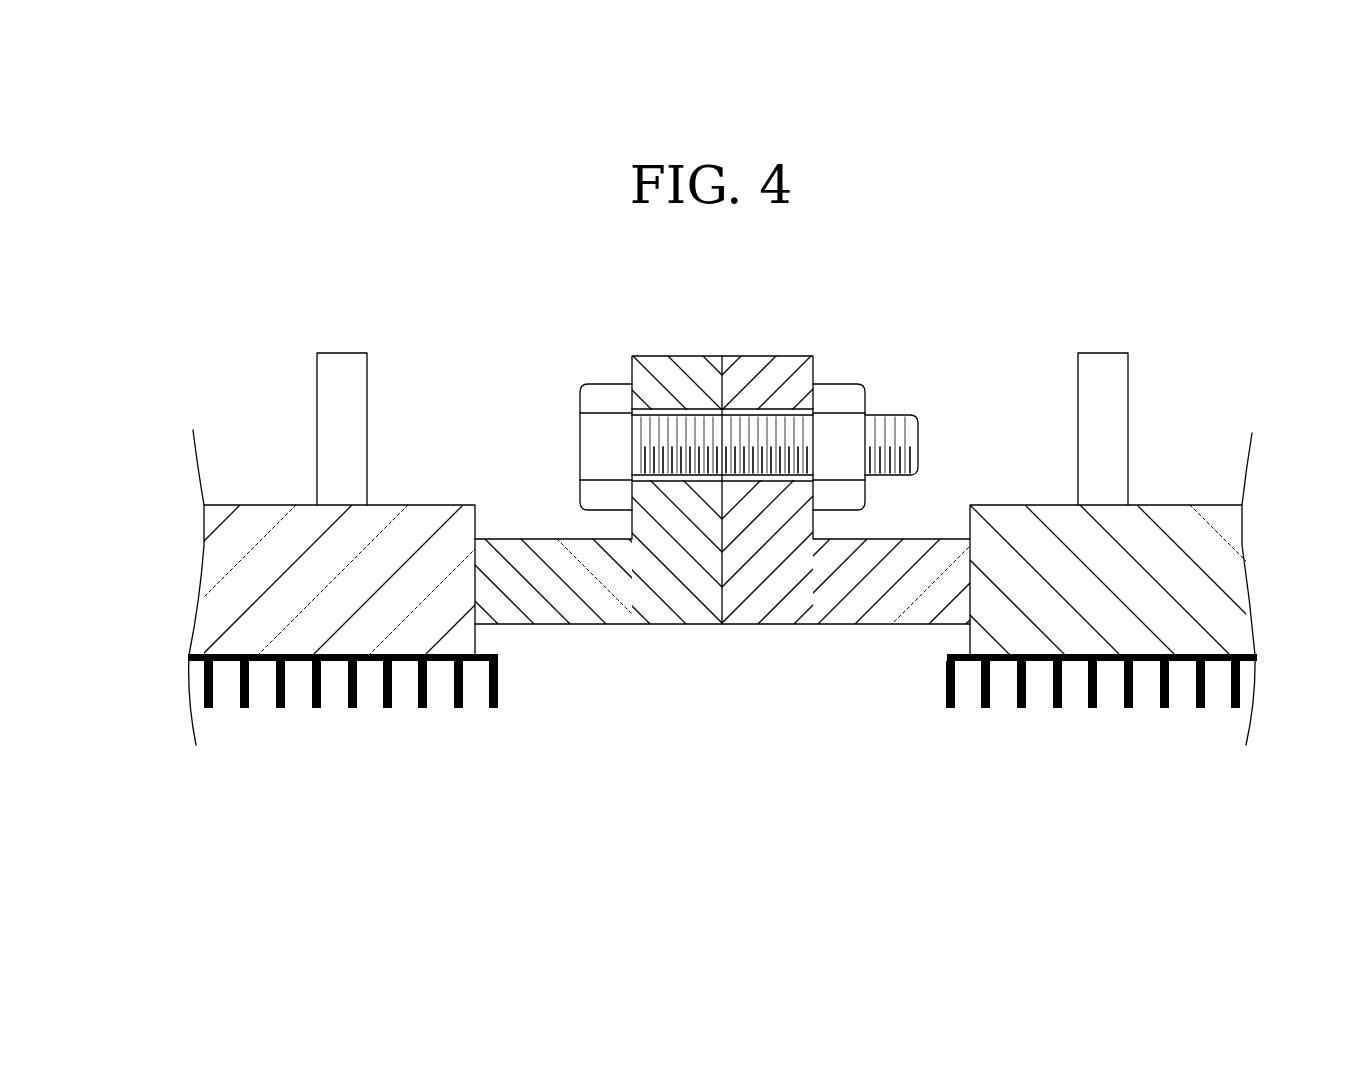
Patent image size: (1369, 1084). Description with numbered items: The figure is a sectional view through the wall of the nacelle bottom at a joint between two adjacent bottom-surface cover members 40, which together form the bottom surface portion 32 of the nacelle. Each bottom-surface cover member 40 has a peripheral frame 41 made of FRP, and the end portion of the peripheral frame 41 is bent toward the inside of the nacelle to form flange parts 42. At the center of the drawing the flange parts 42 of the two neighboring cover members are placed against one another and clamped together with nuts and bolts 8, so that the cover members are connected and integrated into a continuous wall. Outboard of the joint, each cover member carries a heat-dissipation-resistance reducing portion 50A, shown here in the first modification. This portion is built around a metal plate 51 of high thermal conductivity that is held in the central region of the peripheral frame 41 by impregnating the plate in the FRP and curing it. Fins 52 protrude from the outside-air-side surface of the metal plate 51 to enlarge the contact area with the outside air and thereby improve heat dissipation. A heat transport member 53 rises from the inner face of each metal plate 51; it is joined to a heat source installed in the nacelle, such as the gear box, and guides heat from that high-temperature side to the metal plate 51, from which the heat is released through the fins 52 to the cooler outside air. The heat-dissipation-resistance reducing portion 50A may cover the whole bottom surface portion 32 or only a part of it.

The nuts and bolts 8 is at (597, 385).
The bottom surface portion 32 is at (709, 725).
The bottom-surface cover members 40 is at (580, 648).
The peripheral frame 41 is at (655, 627).
The flange parts 42 is at (656, 356).
The heat-dissipation-resistance reducing portion 50A is at (256, 420).
The metal plate 51 is at (212, 588).
The fins 52 is at (318, 688).
The heat transport member 53 is at (367, 390).